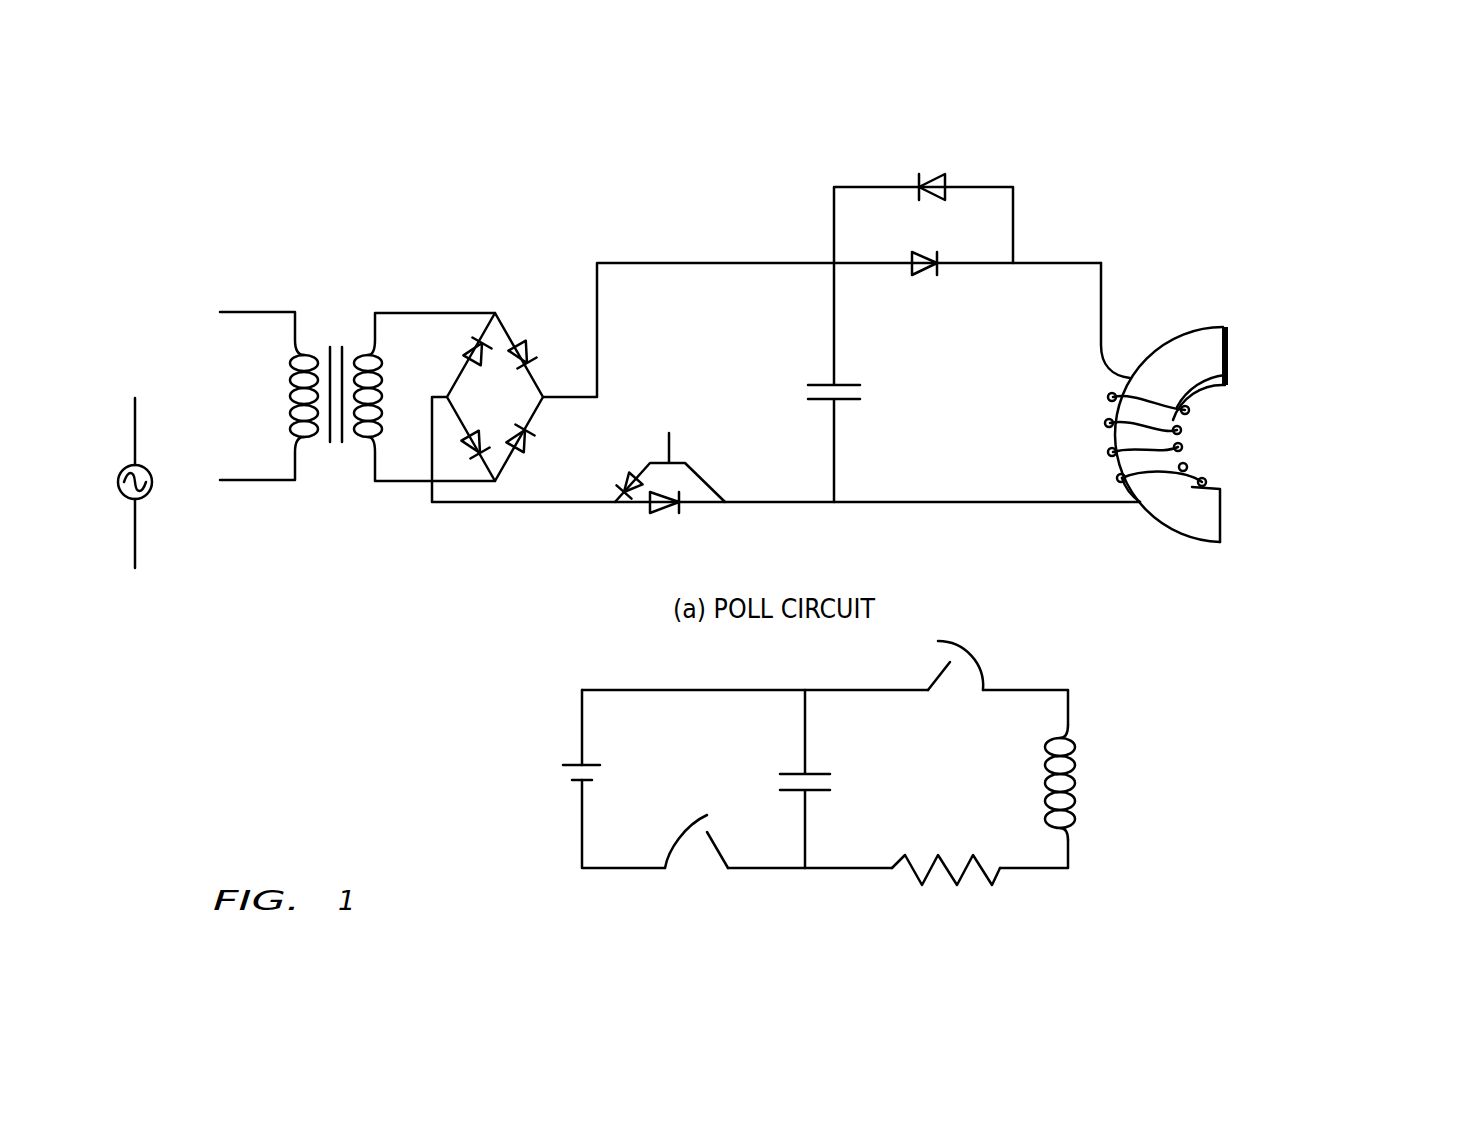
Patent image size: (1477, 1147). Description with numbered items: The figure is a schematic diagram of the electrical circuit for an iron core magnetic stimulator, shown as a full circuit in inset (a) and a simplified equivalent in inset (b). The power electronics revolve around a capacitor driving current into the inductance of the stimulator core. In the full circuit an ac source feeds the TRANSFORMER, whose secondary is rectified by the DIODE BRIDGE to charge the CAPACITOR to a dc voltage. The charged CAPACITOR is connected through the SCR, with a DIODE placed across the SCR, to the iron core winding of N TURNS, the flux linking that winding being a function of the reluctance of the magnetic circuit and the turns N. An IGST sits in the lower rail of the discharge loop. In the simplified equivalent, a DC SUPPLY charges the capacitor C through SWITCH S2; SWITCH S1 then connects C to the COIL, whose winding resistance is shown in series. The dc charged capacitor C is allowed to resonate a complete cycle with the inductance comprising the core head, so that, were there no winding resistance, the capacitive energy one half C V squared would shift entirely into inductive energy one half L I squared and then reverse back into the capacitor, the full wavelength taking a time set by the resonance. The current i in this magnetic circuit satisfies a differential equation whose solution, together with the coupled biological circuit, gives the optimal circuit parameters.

The transformer TRANSFORMER is at (357, 374).
The diode bridge DIODE BRIDGE is at (509, 428).
The capacitor CAPACITOR is at (904, 382).
The diode DIODE is at (923, 201).
The element SCR is at (930, 281).
The element IGST is at (670, 491).
The core winding of N turns N TURNS is at (1287, 402).
The dc supply DC SUPPLY is at (549, 764).
The switch S2 SWITCH S2 is at (688, 868).
The capacitor C is at (821, 779).
The switch S1 SWITCH S1 is at (1025, 665).
The coil COIL is at (1092, 782).